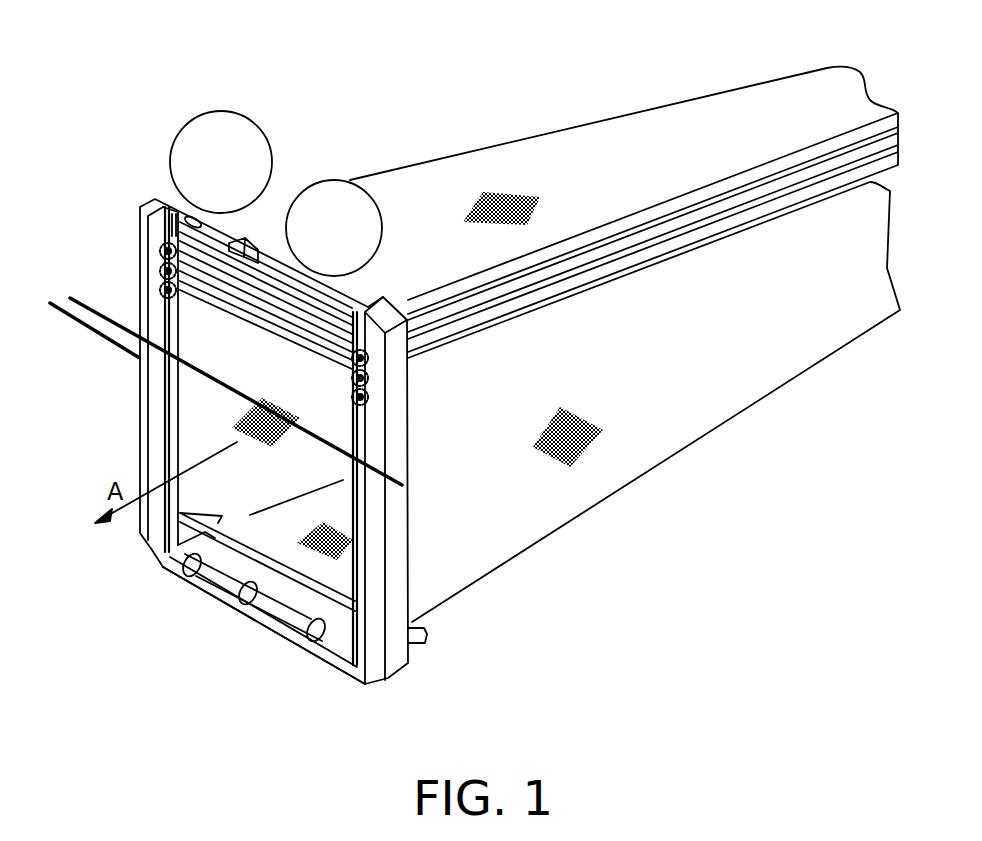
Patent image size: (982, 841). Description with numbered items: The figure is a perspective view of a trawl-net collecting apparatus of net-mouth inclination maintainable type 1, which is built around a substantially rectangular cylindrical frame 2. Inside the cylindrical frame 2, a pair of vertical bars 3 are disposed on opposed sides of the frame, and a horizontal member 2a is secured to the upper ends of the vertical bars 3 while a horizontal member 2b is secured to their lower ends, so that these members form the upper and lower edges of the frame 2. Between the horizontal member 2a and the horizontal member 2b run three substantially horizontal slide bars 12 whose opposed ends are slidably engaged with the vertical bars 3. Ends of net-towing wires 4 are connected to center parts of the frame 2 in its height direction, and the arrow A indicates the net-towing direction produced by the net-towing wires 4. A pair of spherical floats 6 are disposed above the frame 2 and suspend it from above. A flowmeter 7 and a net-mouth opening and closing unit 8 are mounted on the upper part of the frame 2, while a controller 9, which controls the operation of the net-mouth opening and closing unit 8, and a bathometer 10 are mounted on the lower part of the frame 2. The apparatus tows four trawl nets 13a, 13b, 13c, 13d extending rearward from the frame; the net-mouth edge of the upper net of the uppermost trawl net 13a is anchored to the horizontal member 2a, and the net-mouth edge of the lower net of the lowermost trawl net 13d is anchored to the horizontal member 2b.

The trawl-net collecting apparatus of net-mouth inclination maintainable type 1 is at (348, 84).
The cylindrical frame 2 is at (366, 290).
The horizontal member 2a is at (190, 232).
The horizontal member 2b is at (160, 552).
The vertical bars 3 is at (168, 398).
The net-towing wires 4 is at (80, 315).
The floats 6 is at (219, 112).
The flowmeter 7 is at (175, 213).
The net-mouth opening and closing unit 8 is at (242, 245).
The controller 9 is at (210, 580).
The bathometer 10 is at (275, 612).
The slide bars 12 is at (262, 296).
The trawl net 13a is at (712, 120).
The trawl net 13b is at (790, 180).
The trawl net 13c is at (833, 185).
The trawl net 13d is at (803, 333).